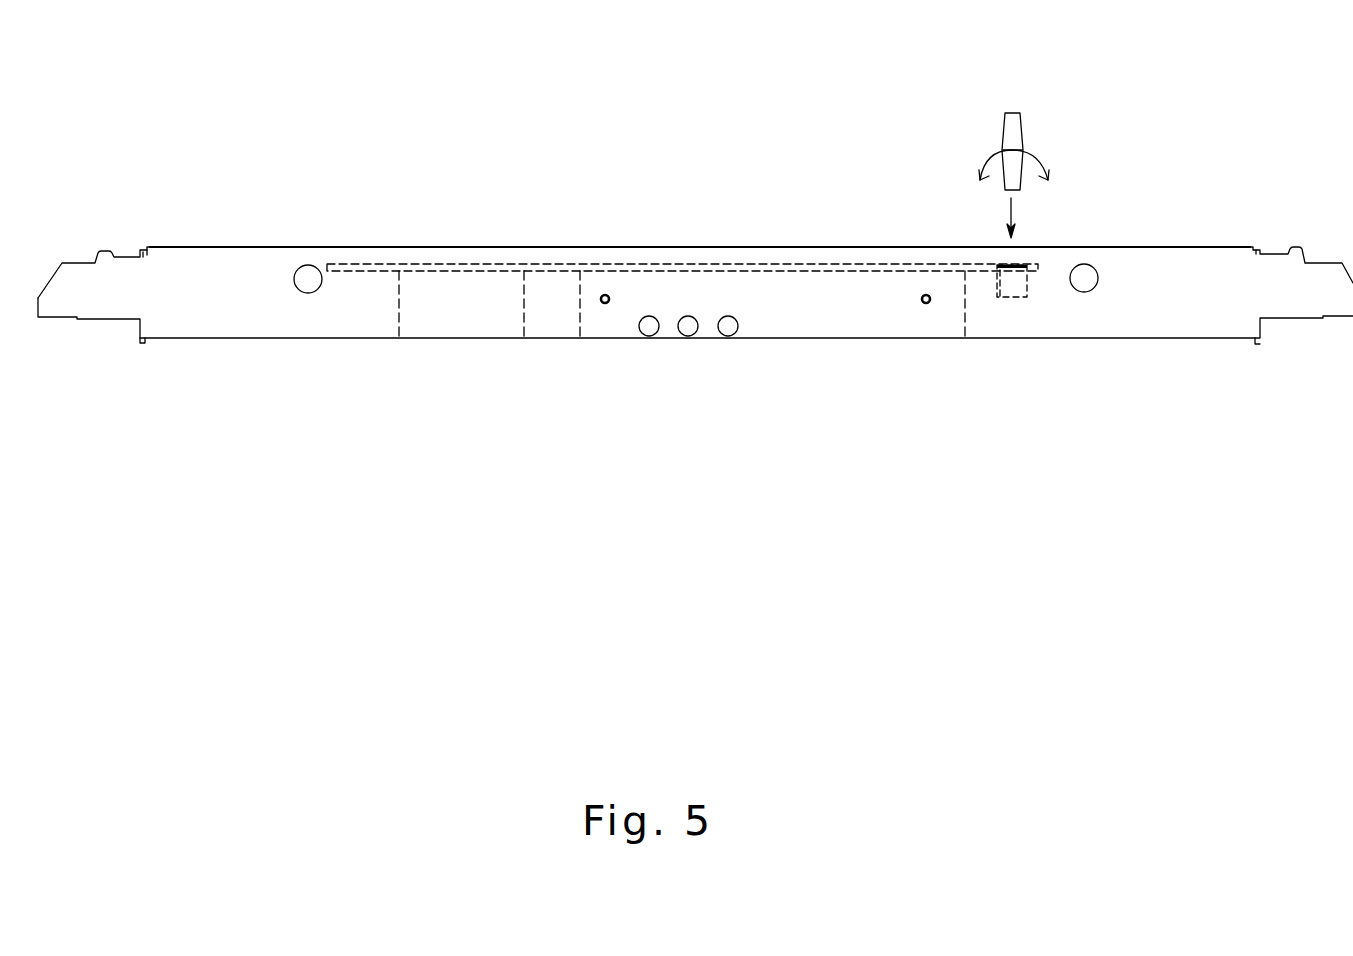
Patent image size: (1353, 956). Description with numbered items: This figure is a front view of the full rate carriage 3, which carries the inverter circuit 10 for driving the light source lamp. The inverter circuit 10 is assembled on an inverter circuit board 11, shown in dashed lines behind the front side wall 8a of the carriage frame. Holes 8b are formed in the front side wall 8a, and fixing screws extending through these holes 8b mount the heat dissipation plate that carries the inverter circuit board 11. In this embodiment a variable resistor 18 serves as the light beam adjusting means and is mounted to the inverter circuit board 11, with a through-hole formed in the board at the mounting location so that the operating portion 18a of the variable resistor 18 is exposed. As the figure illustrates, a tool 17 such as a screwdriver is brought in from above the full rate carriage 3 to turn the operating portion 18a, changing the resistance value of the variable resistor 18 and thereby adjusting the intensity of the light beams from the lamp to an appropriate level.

The full rate carriage 3 is at (193, 242).
The front side wall 8a is at (238, 262).
The holes 8b is at (608, 305).
The inverter circuit 10 is at (485, 325).
The inverter circuit board 11 is at (498, 268).
The tool 17 is at (1012, 125).
The variable resistor 18 is at (1026, 292).
The operating portion 18a is at (995, 298).